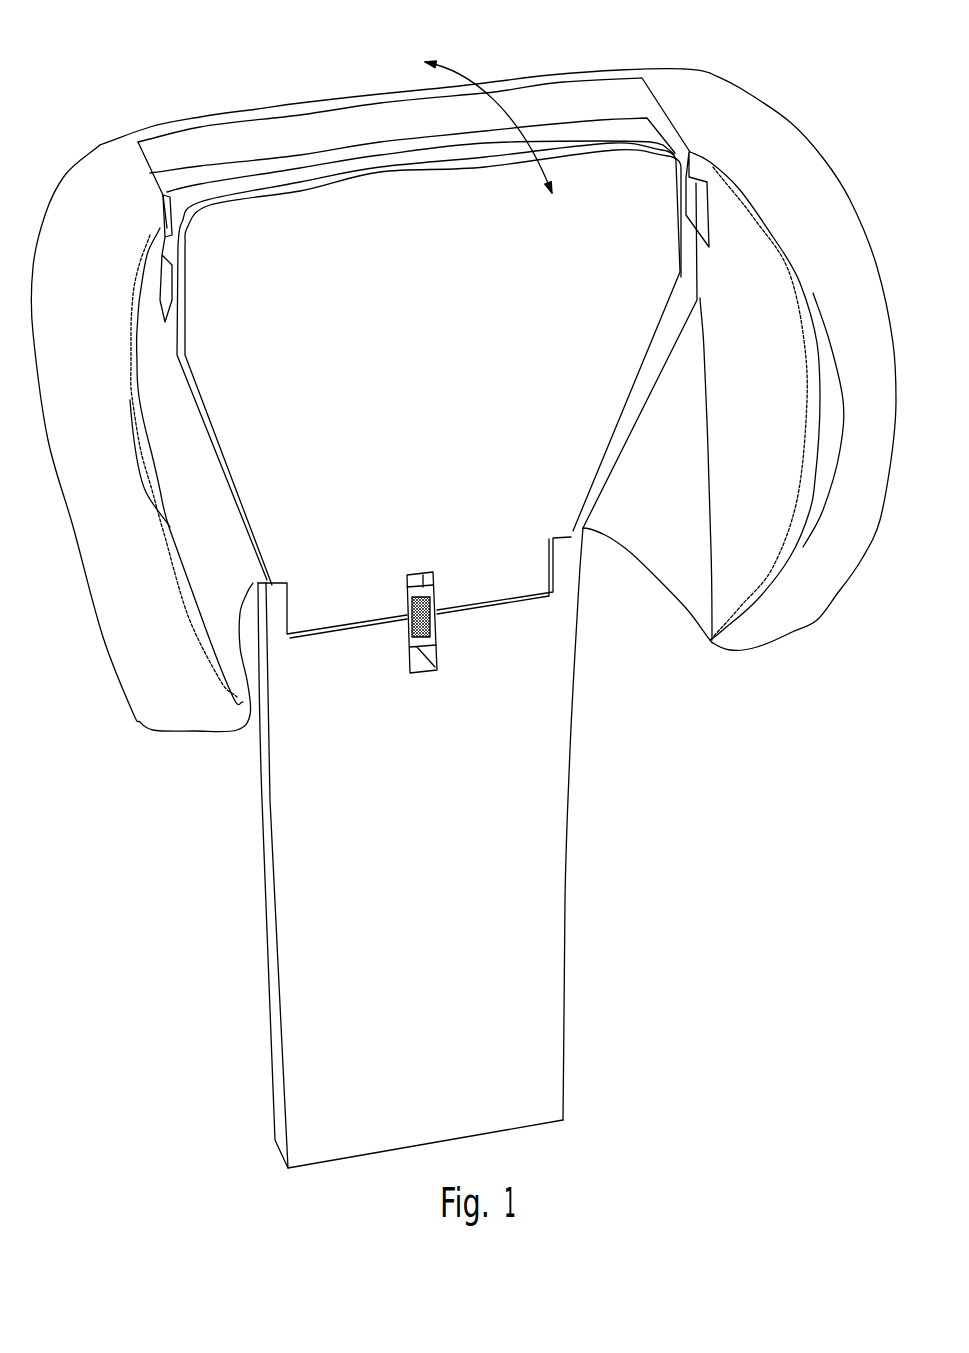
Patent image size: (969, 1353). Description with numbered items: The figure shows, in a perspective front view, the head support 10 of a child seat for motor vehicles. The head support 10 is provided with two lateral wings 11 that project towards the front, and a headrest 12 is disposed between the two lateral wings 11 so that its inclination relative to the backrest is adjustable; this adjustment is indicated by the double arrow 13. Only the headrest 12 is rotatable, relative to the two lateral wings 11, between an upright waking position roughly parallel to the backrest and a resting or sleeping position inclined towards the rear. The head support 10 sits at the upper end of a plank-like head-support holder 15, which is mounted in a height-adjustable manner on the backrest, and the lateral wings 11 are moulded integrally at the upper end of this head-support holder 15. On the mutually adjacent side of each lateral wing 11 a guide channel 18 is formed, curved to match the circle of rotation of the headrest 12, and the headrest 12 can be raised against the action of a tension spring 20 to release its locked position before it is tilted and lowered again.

The head support 10 is at (763, 685).
The lateral wings 11 is at (128, 718).
The headrest 12 is at (287, 208).
The double arrow 13 is at (470, 73).
The head-support holder 15 is at (258, 980).
The guide channel 18 is at (178, 281).
The tension spring 20 is at (434, 622).